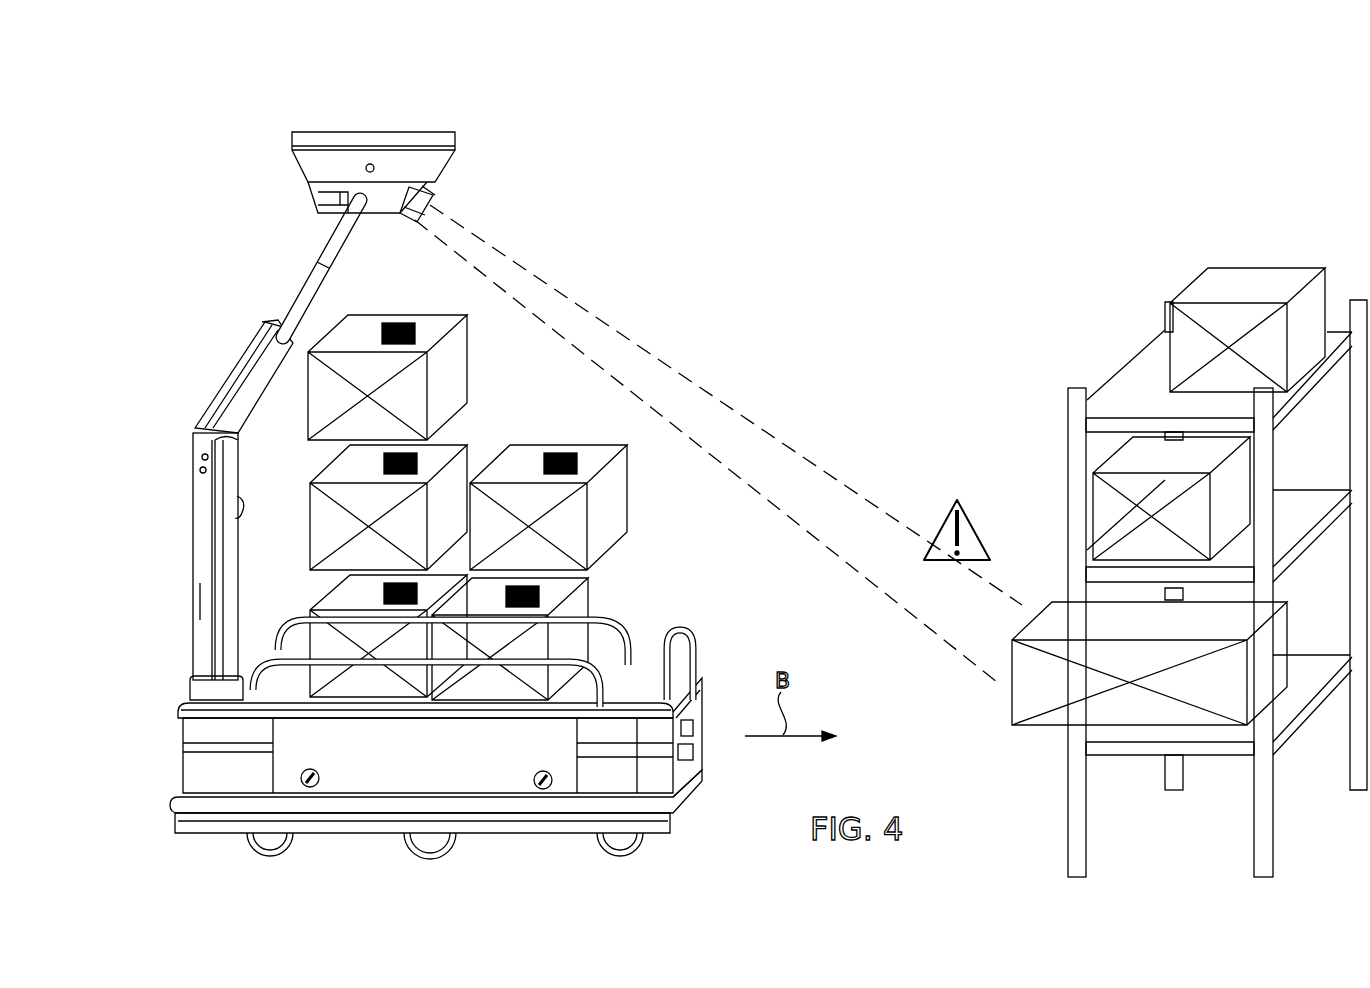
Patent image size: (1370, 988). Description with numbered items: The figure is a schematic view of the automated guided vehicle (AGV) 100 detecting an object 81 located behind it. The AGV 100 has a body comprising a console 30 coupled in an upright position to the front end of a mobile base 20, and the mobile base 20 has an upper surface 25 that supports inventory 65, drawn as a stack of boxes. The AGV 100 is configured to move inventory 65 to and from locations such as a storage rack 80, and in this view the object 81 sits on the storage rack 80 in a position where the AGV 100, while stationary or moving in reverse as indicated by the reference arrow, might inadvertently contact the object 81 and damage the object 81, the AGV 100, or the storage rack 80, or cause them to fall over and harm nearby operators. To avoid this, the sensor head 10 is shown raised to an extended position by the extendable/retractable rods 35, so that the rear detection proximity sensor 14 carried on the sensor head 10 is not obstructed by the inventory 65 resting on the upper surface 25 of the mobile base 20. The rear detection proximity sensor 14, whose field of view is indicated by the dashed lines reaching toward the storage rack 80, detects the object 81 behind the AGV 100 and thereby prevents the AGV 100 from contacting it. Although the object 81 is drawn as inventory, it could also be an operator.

The automated guided vehicle 100 is at (170, 344).
The sensor head 10 is at (357, 130).
The rear detection proximity sensor 14 is at (435, 197).
The extendable/retractable rods 35 is at (330, 258).
The console 30 is at (203, 533).
The mobile base 20 is at (197, 770).
The upper surface 25 is at (650, 683).
The inventory 65 is at (447, 362).
The storage rack 80 is at (1068, 405).
The object 81 is at (1022, 695).